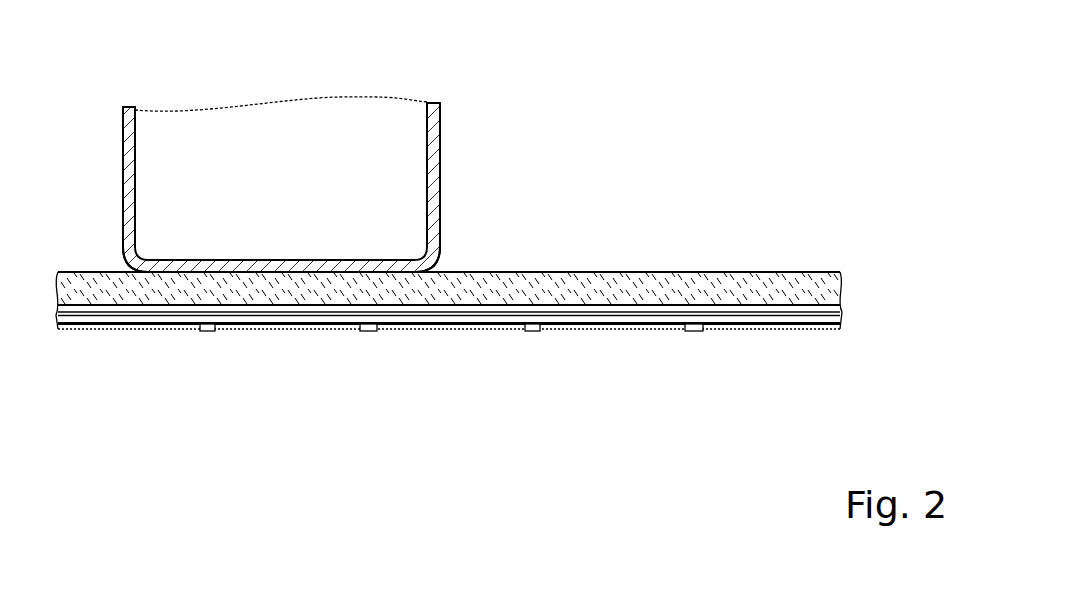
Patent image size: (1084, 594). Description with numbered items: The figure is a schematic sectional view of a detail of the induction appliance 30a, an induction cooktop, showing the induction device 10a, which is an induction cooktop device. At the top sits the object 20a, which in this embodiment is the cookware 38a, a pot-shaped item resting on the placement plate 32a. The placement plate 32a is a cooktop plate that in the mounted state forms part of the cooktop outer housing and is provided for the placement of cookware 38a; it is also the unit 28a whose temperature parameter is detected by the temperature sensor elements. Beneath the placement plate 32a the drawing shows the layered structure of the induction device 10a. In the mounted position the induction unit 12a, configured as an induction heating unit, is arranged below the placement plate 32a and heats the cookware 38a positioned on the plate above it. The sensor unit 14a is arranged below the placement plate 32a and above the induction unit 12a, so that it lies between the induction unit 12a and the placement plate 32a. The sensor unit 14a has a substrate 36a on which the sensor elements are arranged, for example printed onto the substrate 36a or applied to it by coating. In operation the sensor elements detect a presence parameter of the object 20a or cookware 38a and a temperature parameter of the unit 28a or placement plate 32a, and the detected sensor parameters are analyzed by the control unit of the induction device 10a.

The induction device 10a is at (766, 107).
The induction appliance 30a is at (850, 91).
The object 20a is at (440, 158).
The cookware 38a is at (440, 158).
The unit 28a is at (602, 272).
The placement plate 32a is at (602, 272).
The induction unit 12a is at (443, 330).
The sensor unit 14a is at (848, 320).
The substrate 36a is at (583, 330).